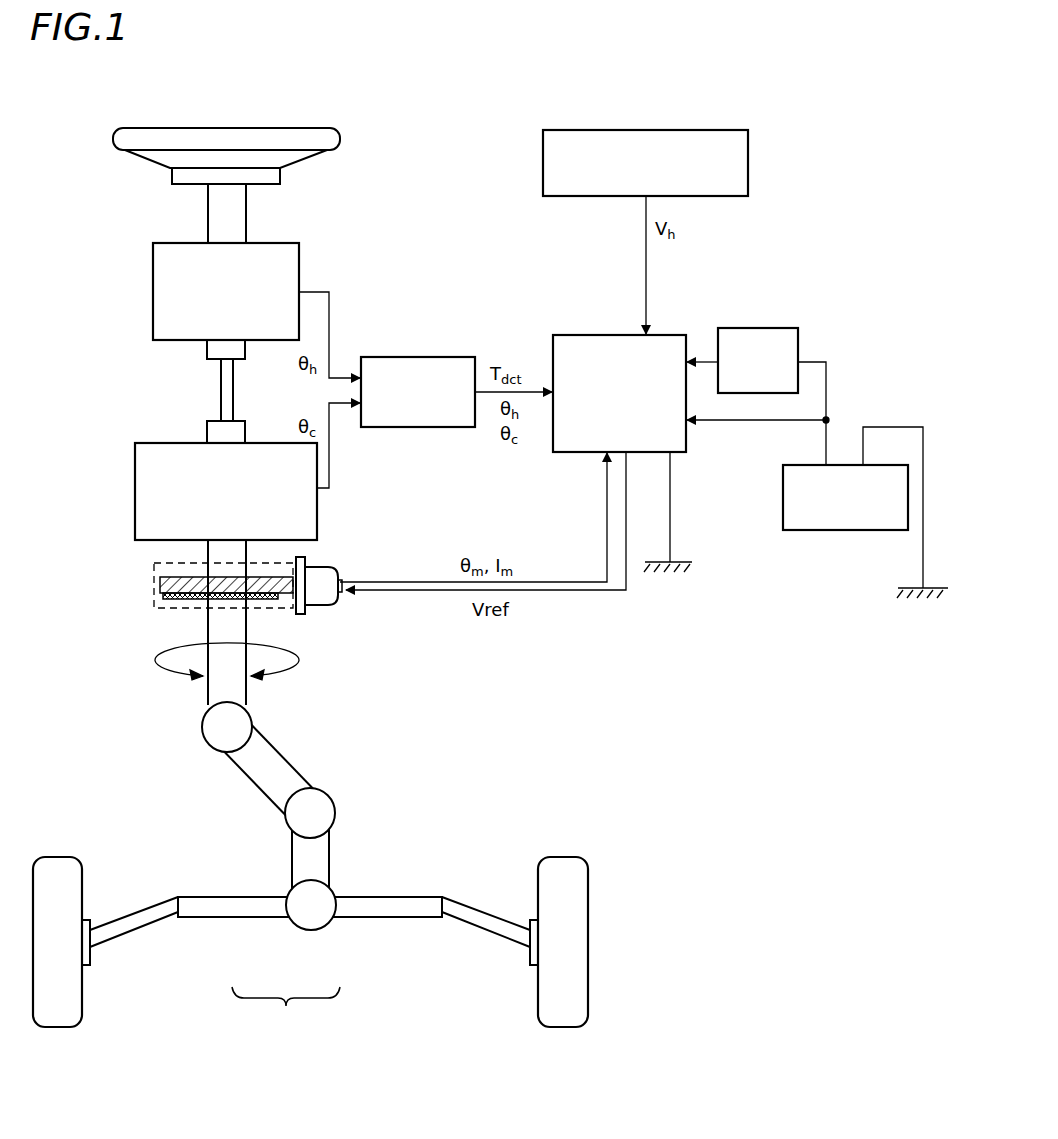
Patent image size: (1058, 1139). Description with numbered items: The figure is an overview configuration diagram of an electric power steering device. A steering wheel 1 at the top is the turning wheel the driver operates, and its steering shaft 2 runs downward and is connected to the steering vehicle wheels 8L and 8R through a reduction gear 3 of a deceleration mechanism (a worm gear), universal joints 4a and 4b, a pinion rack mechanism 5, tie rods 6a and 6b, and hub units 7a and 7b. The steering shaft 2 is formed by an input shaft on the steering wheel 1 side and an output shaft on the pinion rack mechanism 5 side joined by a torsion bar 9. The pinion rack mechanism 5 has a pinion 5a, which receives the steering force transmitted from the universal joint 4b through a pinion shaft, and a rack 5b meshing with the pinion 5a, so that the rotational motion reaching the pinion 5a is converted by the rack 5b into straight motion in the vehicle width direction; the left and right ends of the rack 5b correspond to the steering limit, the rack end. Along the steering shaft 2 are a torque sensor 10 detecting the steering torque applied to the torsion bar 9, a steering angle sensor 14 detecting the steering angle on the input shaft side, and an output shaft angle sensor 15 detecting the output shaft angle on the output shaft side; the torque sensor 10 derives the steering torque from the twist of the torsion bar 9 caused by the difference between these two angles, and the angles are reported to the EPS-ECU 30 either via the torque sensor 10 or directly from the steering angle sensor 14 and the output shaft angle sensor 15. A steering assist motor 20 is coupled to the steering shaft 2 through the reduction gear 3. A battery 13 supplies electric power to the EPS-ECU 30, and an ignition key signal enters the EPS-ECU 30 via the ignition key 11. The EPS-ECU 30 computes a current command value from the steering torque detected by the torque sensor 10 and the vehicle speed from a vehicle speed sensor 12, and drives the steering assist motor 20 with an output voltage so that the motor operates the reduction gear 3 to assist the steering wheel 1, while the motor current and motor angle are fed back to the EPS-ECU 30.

The steering wheel 1 is at (300, 128).
The steering shaft 2 is at (208, 218).
The reduction gear 3 is at (172, 612).
The universal joint 4a is at (202, 729).
The universal joint 4b is at (335, 813).
The pinion rack mechanism 5 is at (286, 1012).
The pinion 5a is at (312, 930).
The rack 5b is at (250, 917).
The tie rod 6a is at (140, 912).
The tie rod 6b is at (480, 912).
The hub unit 7a is at (90, 955).
The hub unit 7b is at (530, 957).
The steering vehicle wheel 8L is at (52, 1027).
The steering vehicle wheel 8R is at (565, 1027).
The torsion bar 9 is at (221, 388).
The torque sensor 10 is at (393, 357).
The ignition key 11 is at (780, 328).
The vehicle speed sensor 12 is at (672, 130).
The battery 13 is at (824, 530).
The steering angle sensor 14 is at (153, 291).
The output shaft angle sensor 15 is at (135, 490).
The steering assist motor 20 is at (332, 605).
The EPS-ECU 30 is at (662, 335).